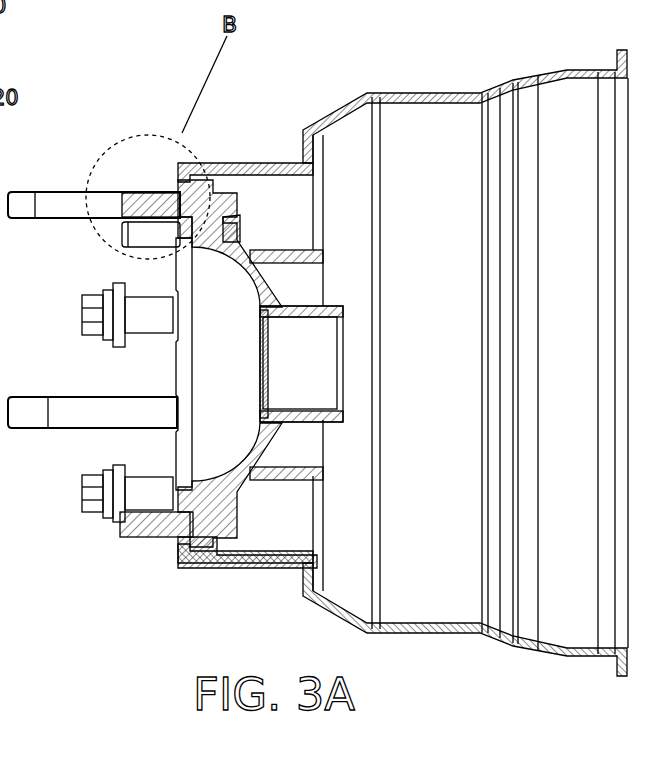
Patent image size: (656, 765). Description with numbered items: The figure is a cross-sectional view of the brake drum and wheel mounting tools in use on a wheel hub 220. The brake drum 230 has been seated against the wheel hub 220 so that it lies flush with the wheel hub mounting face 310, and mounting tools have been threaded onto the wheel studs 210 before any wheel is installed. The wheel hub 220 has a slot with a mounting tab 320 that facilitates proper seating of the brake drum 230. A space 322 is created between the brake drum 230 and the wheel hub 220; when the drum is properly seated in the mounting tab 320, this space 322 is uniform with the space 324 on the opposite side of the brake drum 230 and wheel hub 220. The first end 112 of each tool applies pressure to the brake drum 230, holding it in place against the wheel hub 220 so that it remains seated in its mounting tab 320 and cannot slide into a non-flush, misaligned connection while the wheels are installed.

The first end 112 is at (173, 188).
The wheel studs 210 is at (152, 190).
The wheel hub 220 is at (228, 190).
The brake drum 230 is at (281, 162).
The wheel hub mounting face 310 is at (238, 225).
The mounting tab 320 is at (174, 234).
The space 322 is at (125, 227).
The space 324 is at (172, 480).